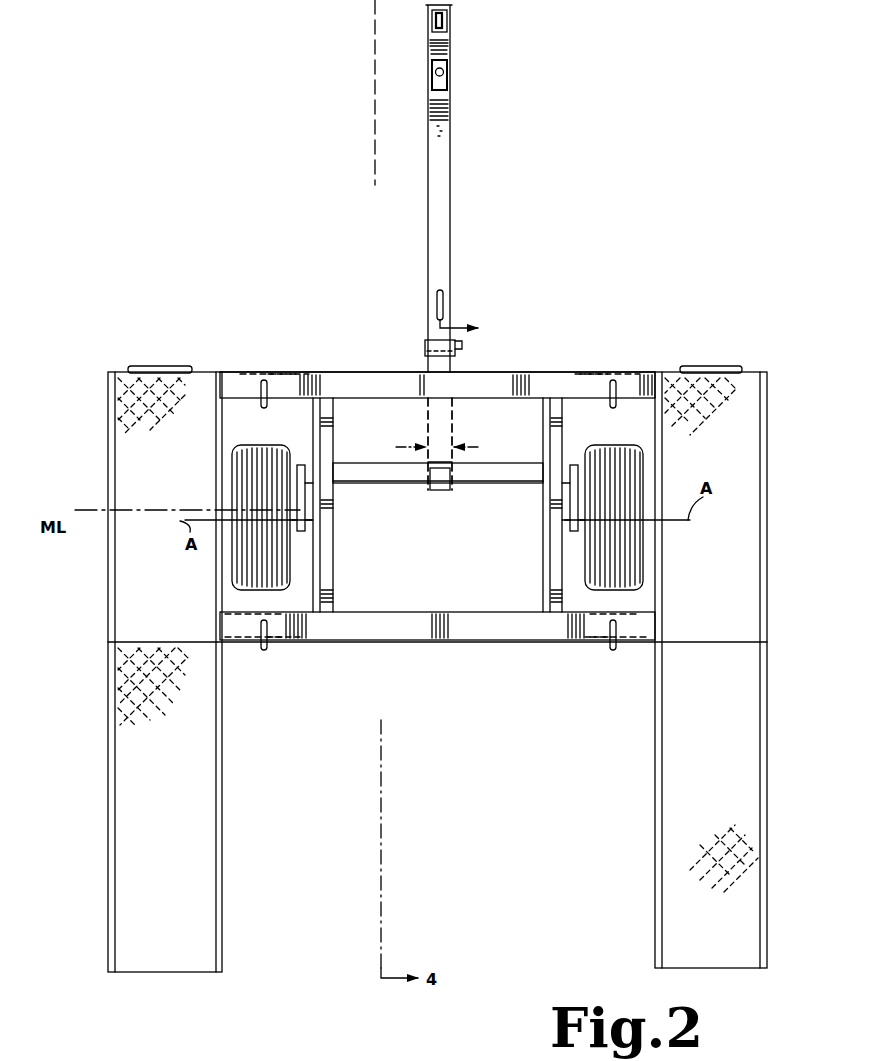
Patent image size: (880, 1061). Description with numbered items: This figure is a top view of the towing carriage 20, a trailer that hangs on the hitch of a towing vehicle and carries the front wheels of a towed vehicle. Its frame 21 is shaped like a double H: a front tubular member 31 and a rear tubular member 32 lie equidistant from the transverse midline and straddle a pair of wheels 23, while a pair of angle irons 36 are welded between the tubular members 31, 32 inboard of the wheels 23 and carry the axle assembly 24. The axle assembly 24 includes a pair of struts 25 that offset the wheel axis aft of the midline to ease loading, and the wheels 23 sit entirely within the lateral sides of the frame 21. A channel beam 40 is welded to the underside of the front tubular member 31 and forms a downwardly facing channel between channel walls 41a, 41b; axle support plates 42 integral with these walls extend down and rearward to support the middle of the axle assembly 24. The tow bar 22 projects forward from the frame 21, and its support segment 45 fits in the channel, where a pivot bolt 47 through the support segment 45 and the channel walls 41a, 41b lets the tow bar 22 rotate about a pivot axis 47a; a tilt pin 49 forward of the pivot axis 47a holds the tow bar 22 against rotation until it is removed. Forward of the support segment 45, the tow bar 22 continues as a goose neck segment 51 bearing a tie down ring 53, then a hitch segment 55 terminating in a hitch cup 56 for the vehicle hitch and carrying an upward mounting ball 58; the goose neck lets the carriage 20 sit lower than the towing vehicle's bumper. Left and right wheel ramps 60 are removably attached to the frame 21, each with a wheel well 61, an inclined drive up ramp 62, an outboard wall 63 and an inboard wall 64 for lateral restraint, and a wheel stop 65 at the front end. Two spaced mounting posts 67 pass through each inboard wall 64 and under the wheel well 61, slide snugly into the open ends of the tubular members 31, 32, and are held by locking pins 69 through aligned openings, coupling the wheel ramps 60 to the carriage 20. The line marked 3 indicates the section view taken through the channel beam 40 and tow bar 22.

The towing carriage 20 is at (527, 370).
The frame 21 is at (440, 645).
The tow bar 22 is at (453, 150).
The wheels 23 is at (282, 445).
The axle assembly 24 is at (370, 486).
The struts 25 is at (302, 530).
The tubular member 31 is at (357, 372).
The tubular member 32 is at (370, 640).
The angle irons 36 is at (333, 578).
The channel beam 40 is at (428, 366).
The channel wall 41a is at (455, 424).
The channel wall 41b is at (428, 412).
The axle support plates 42 is at (430, 492).
The support segment 45 is at (443, 318).
The pivot bolt 47 is at (426, 444).
The pivot axis 47a is at (470, 448).
The tilt pin 49 is at (463, 345).
The goose neck segment 51 is at (451, 222).
The tie down ring 53 is at (437, 302).
The hitch segment 55 is at (446, 54).
The hitch cup 56 is at (448, 22).
The mounting ball 58 is at (447, 84).
The wheel ramps 60 is at (136, 456).
The wheel well 61 is at (170, 559).
The drive up ramp 62 is at (178, 829).
The outboard walls 63 is at (110, 800).
The inboard walls 64 is at (222, 796).
The wheel stop 65 is at (178, 366).
The mounting posts 67 is at (286, 380).
The locking pins 69 is at (264, 380).
The section line 3 is at (478, 525).